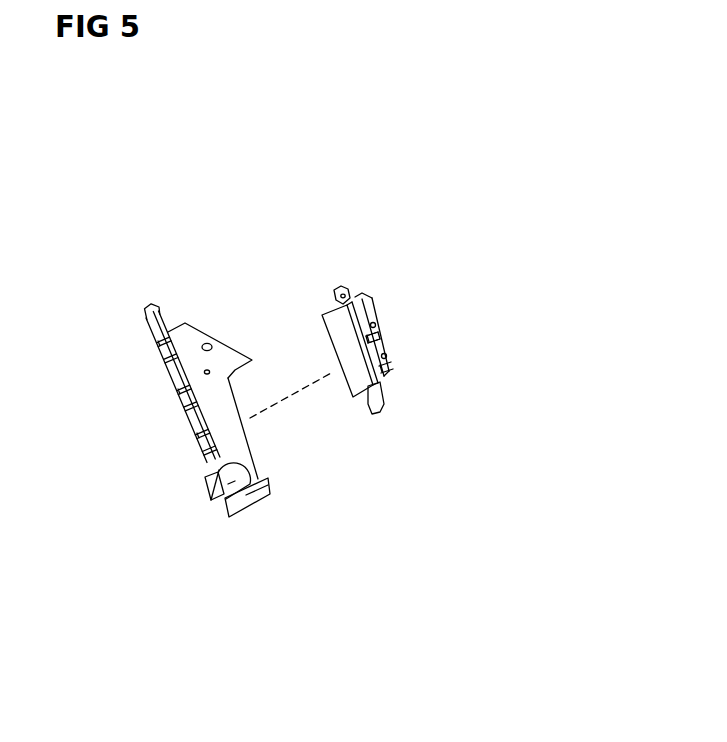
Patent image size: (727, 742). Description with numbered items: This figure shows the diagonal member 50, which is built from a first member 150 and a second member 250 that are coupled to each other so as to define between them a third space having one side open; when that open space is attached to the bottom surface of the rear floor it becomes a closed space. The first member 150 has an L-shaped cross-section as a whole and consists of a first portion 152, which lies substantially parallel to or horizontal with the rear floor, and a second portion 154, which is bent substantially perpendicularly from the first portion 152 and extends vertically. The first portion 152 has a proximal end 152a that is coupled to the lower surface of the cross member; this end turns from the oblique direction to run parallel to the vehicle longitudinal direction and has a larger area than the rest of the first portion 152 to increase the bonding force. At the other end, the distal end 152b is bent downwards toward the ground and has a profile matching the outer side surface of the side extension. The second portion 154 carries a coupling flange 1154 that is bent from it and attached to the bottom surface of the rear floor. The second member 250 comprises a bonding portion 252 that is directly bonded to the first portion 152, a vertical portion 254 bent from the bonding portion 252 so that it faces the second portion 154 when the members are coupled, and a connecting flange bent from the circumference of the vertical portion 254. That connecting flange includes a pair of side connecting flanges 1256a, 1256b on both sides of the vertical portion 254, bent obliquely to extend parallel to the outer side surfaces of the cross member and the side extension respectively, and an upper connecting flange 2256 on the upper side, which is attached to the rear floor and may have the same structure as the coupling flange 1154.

The diagonal member 50 is at (237, 196).
The first member 150 is at (166, 298).
The first portion 152 is at (238, 453).
The proximal end 152a is at (190, 338).
The distal end 152b is at (252, 498).
The coupling flange 1154 is at (193, 423).
The second portion 154 is at (233, 510).
The second member 250 is at (384, 287).
The bonding portion 252 is at (353, 398).
The vertical portion 254 is at (388, 362).
The side connecting flange 1256a is at (340, 290).
The side connecting flange 1256b is at (453, 447).
The upper connecting flange 2256 is at (384, 337).